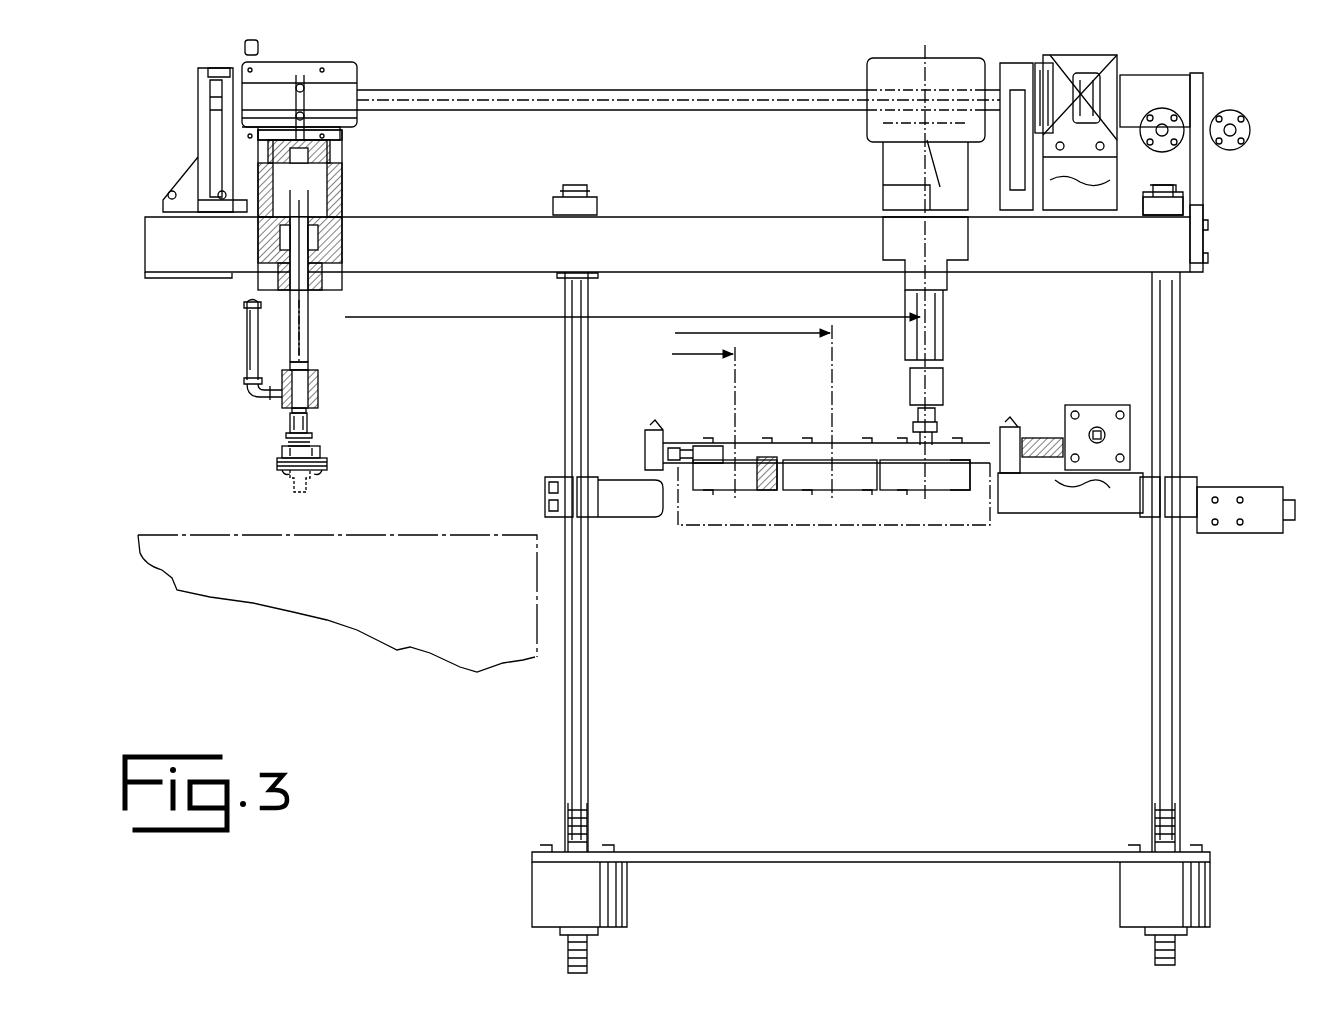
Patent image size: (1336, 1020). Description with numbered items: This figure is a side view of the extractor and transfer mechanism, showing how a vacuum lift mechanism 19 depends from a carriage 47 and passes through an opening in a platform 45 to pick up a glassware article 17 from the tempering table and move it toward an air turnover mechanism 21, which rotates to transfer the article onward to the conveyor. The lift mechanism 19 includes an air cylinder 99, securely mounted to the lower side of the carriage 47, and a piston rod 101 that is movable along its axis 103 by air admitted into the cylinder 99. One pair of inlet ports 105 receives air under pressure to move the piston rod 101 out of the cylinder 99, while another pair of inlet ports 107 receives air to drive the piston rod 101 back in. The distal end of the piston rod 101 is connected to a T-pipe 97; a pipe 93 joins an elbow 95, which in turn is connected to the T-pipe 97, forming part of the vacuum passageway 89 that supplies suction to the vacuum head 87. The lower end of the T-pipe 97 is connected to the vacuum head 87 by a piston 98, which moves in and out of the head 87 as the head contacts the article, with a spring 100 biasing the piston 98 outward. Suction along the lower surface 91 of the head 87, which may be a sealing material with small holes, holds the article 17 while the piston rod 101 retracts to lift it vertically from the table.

The article 17 is at (317, 477).
The vacuum lift mechanism 19 is at (330, 417).
The air turnover mechanism 21 is at (866, 545).
The platform 45 is at (160, 244).
The carriage 47 is at (348, 75).
The vacuum head 87 is at (323, 447).
The vacuum passageway 89 is at (250, 335).
The lower surface 91 is at (283, 473).
The pipe 93 is at (245, 315).
The elbow 95 is at (248, 390).
The T-pipe 97 is at (320, 385).
The piston 98 is at (288, 422).
The air cylinder 99 is at (343, 183).
The spring 100 is at (287, 433).
The piston rod 101 is at (300, 318).
The axis 103 is at (300, 335).
The inlet ports 105 is at (343, 143).
The inlet ports 107 is at (343, 230).